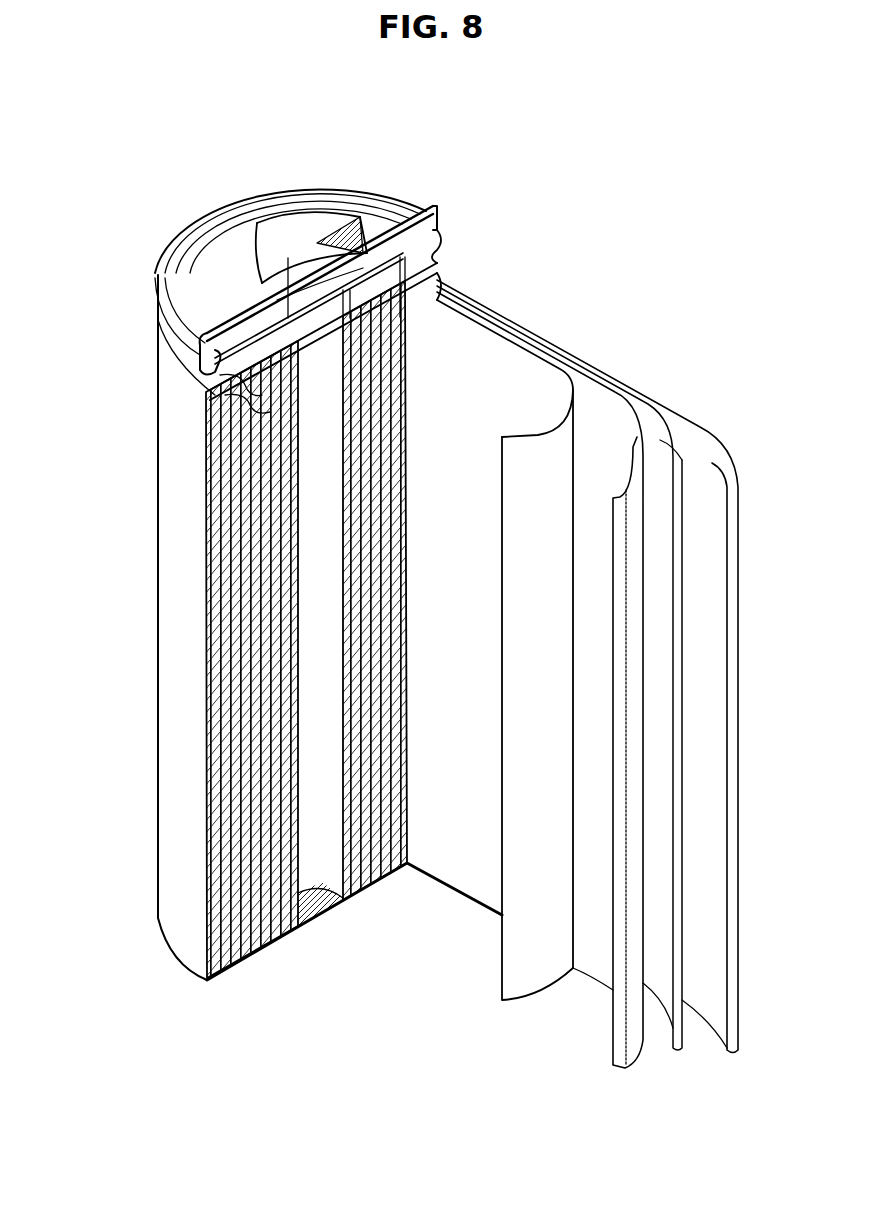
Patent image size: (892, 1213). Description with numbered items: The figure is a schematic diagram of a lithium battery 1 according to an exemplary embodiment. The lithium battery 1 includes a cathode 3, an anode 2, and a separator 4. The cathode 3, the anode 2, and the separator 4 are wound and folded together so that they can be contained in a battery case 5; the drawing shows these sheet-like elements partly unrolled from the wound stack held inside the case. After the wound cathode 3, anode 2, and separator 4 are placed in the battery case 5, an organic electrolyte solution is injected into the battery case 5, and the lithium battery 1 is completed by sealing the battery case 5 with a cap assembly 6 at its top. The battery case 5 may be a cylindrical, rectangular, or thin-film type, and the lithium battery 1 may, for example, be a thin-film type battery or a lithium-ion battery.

The lithium battery 1 is at (597, 192).
The anode 2 is at (713, 447).
The cathode 3 is at (630, 440).
The separator 4 is at (547, 433).
The battery case 5 is at (165, 628).
The cap assembly 6 is at (290, 223).